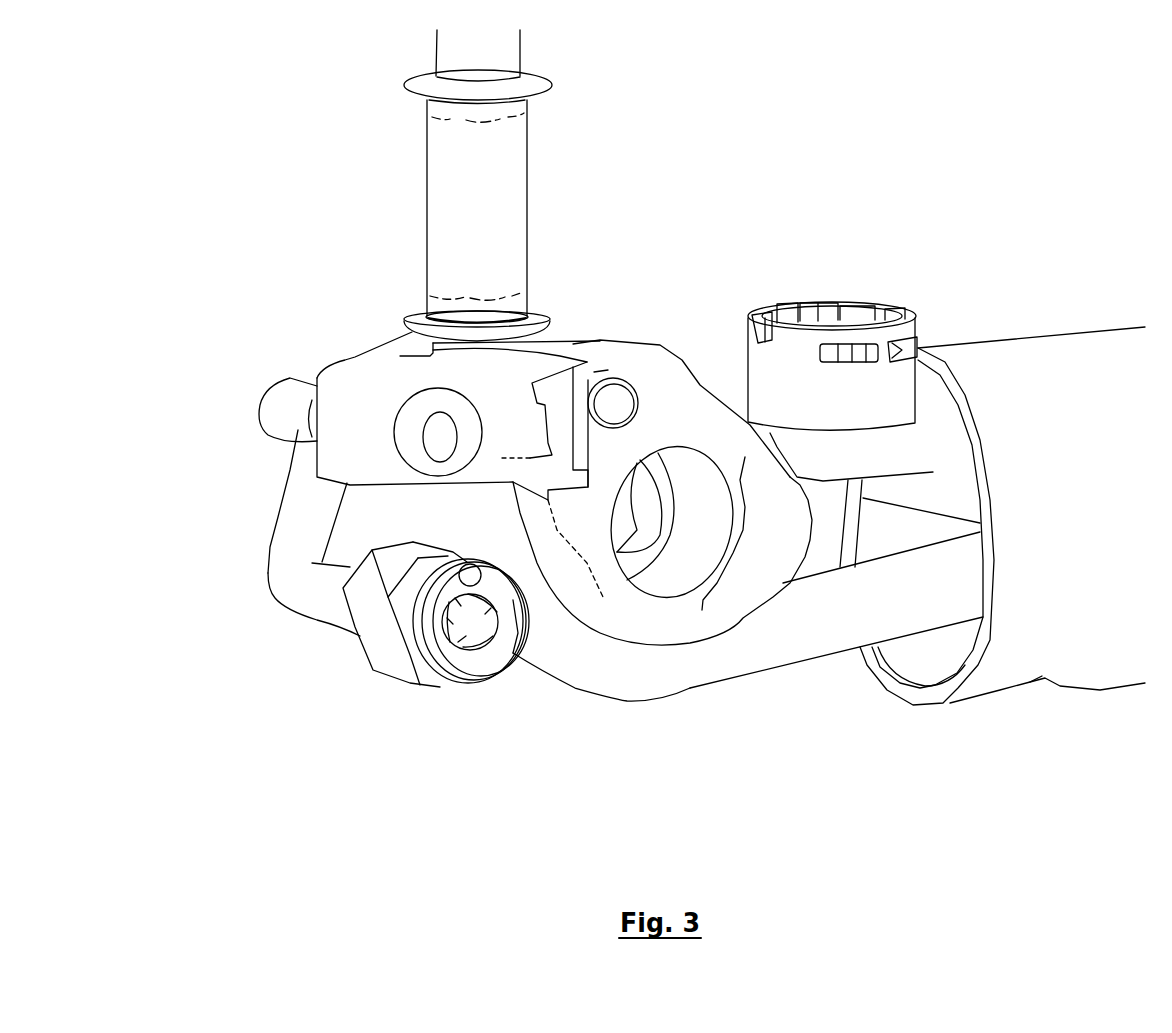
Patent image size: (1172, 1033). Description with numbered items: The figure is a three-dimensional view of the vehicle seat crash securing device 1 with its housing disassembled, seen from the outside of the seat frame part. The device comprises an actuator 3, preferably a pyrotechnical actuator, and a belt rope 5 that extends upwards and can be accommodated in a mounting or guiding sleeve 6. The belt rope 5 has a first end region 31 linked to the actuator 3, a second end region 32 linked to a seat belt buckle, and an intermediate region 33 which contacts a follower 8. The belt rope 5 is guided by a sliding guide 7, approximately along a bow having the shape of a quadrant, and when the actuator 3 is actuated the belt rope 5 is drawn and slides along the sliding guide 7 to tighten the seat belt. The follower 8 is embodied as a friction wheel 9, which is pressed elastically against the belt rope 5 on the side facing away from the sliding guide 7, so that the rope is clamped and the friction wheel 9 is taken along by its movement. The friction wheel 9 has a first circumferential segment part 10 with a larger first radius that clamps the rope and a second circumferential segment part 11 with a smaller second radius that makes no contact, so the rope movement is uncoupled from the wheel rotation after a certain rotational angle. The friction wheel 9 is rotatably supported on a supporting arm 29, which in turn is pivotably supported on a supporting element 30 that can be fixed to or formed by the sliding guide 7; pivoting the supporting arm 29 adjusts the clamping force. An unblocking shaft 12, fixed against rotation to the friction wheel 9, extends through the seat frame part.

The vehicle seat crash securing device 1 is at (698, 130).
The actuator 3 is at (1081, 514).
The belt rope 5 is at (810, 628).
The mounting or guiding sleeve 6 is at (410, 316).
The sliding guide 7 is at (695, 395).
The follower 8 is at (471, 714).
The friction wheel 9 is at (420, 673).
The first circumferential segment part 10 is at (478, 564).
The second circumferential segment part 11 is at (432, 556).
The unblocking shaft 12 is at (315, 608).
The supporting arm 29 is at (312, 502).
The supporting element 30 is at (360, 378).
The first end region 31 is at (455, 56).
The second end region 32 is at (968, 578).
The intermediate region 33 is at (640, 670).